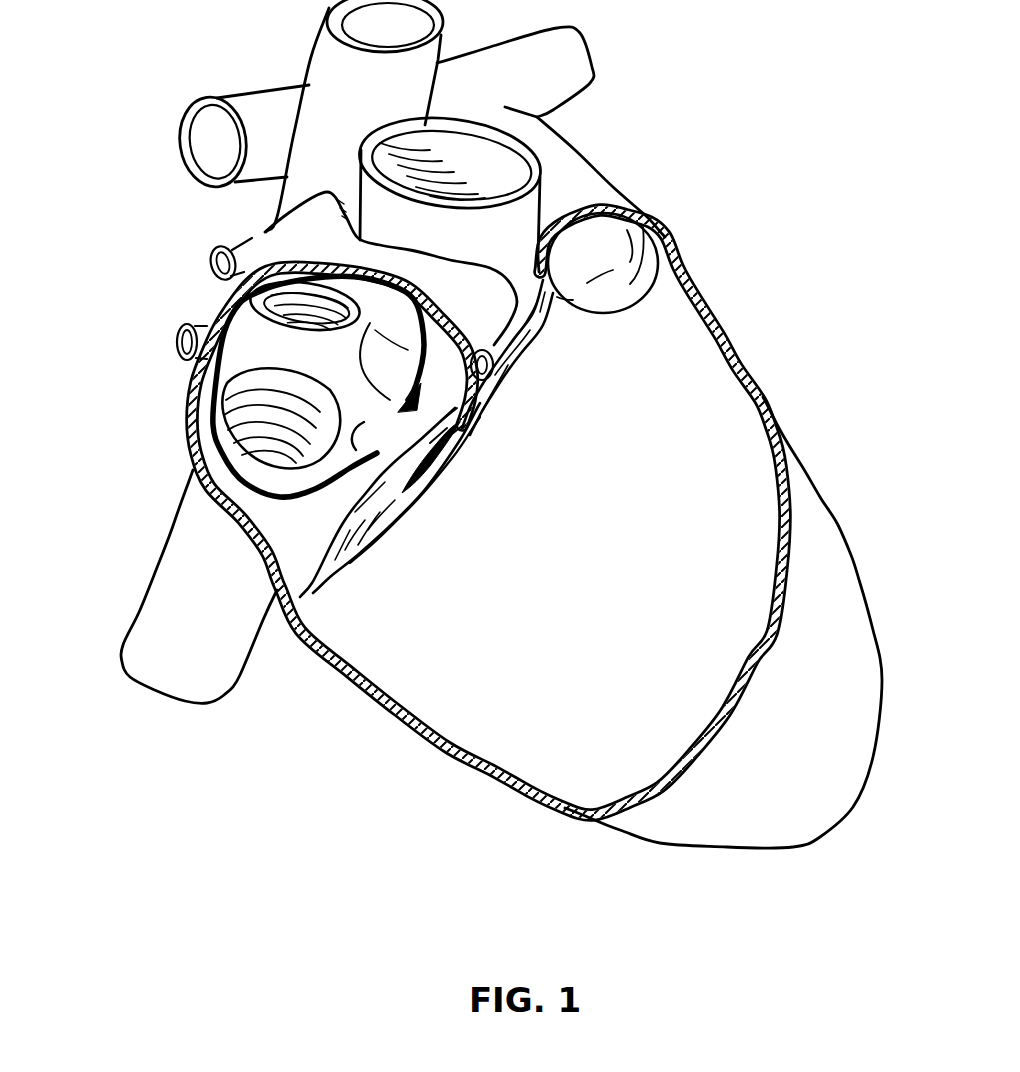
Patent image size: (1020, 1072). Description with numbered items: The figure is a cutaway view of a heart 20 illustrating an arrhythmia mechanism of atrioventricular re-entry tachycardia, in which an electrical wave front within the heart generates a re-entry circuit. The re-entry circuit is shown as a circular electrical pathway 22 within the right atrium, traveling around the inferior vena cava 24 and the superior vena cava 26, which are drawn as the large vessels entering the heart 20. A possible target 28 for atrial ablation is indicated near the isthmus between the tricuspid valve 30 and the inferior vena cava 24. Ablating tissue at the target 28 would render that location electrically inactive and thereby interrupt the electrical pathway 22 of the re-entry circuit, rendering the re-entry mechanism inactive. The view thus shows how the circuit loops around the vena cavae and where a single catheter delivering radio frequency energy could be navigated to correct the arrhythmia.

The heart 20 is at (613, 187).
The circular electrical pathway 22 is at (212, 440).
The inferior vena cava 24 is at (201, 572).
The superior vena cava 26 is at (335, 56).
The target 28 is at (389, 427).
The tricuspid valve 30 is at (380, 537).